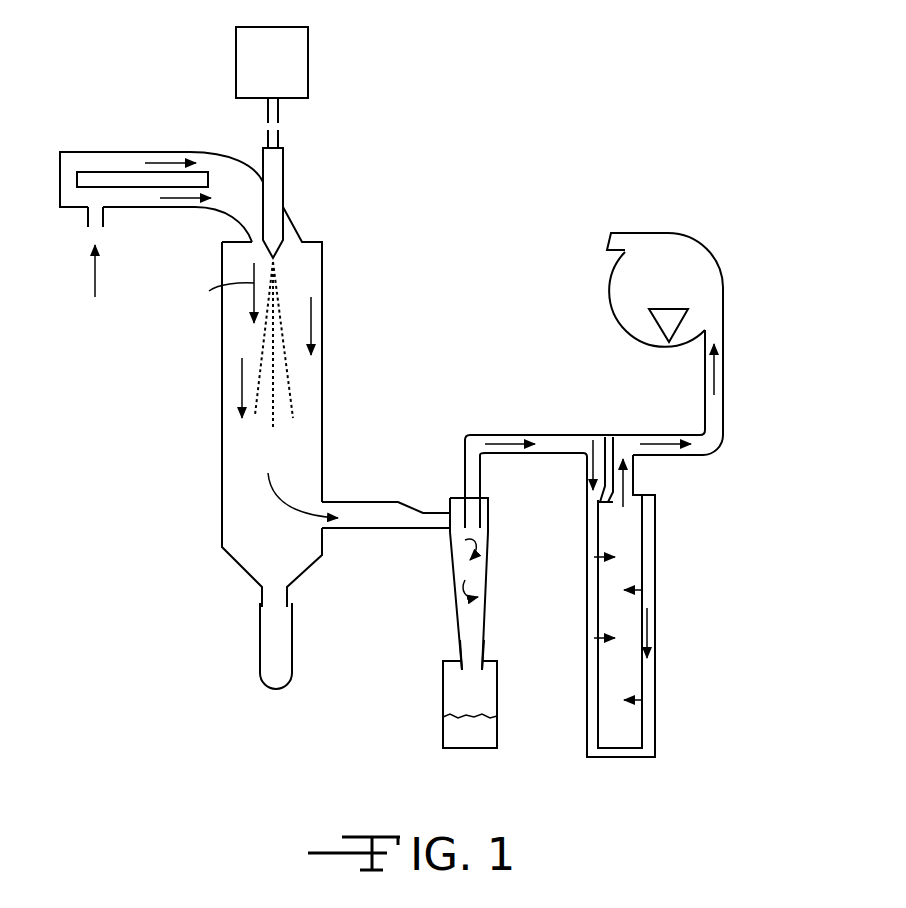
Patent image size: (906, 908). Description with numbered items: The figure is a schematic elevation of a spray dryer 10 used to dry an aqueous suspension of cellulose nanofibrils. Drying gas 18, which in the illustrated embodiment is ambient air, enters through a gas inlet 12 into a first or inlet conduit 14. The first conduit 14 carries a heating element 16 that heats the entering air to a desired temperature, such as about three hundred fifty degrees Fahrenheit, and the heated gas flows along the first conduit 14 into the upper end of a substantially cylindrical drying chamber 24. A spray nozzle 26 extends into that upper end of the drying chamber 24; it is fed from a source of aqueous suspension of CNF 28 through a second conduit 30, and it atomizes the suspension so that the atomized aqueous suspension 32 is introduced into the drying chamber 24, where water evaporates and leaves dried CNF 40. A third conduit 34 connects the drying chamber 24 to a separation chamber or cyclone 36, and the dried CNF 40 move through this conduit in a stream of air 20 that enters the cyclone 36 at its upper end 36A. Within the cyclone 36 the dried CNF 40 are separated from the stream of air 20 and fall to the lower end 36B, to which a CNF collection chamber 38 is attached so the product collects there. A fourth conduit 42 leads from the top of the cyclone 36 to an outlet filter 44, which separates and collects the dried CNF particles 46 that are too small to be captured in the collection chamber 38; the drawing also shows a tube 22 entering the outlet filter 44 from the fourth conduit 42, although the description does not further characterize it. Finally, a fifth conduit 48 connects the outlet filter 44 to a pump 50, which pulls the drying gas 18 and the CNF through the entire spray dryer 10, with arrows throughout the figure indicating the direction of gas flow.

The spray dryer 10 is at (78, 38).
The gas inlet 12 is at (88, 215).
The first conduit 14 is at (80, 152).
The heating element 16 is at (133, 176).
The drying gas 18 is at (170, 162).
The stream of air 20 is at (275, 500).
The outlet tube 22 is at (587, 462).
The drying chamber 24 is at (225, 368).
The spray nozzle 26 is at (280, 181).
The source of aqueous suspension of CNF 28 is at (308, 57).
The second conduit 30 is at (283, 133).
The atomized aqueous suspension 32 is at (298, 385).
The third conduit 34 is at (378, 502).
The cyclone 36 is at (455, 570).
The upper end of the cyclone 36A is at (455, 498).
The lower end of the cyclone 36B is at (485, 648).
The CNF collection chamber 38 is at (445, 702).
The dried CNF 40 is at (453, 730).
The fourth conduit 42 is at (543, 435).
The outlet filter 44 is at (633, 545).
The dried CNF particles 46 is at (510, 435).
The fifth conduit 48 is at (715, 403).
The pump 50 is at (705, 253).